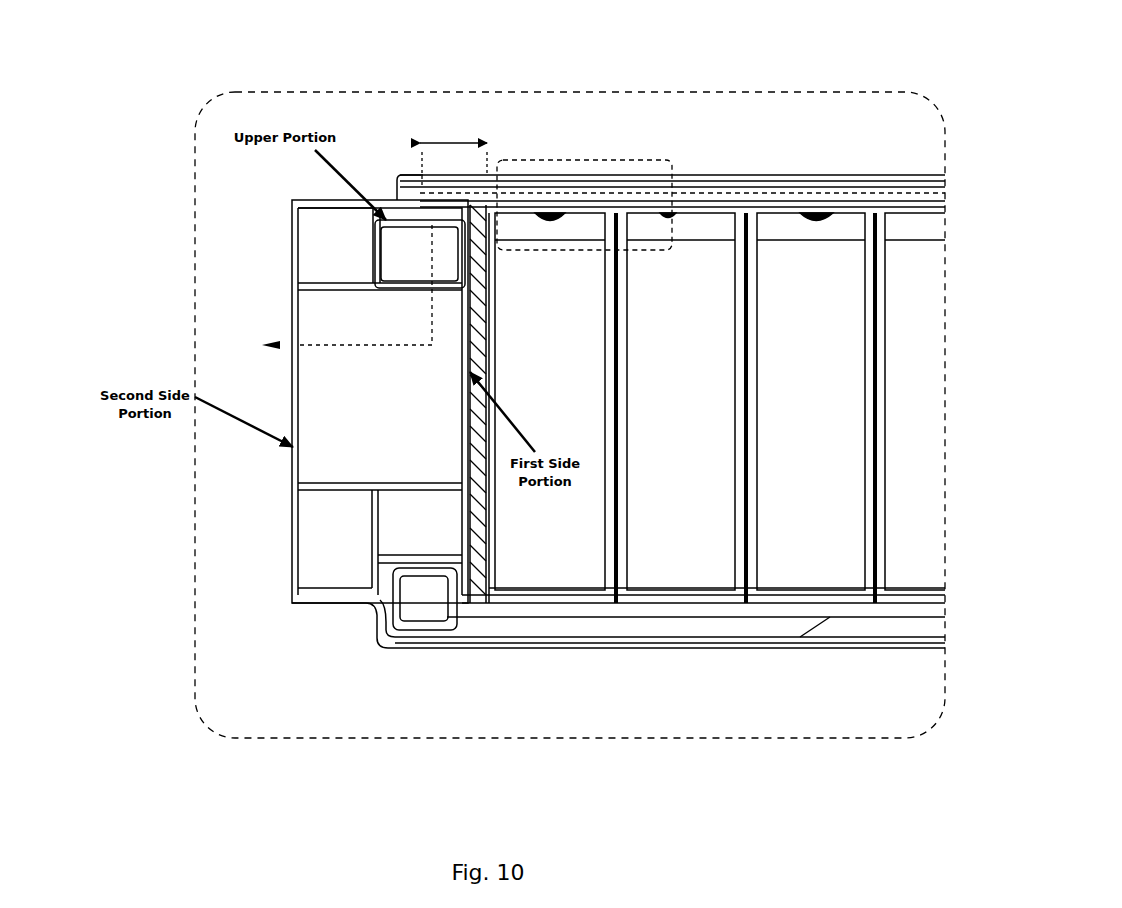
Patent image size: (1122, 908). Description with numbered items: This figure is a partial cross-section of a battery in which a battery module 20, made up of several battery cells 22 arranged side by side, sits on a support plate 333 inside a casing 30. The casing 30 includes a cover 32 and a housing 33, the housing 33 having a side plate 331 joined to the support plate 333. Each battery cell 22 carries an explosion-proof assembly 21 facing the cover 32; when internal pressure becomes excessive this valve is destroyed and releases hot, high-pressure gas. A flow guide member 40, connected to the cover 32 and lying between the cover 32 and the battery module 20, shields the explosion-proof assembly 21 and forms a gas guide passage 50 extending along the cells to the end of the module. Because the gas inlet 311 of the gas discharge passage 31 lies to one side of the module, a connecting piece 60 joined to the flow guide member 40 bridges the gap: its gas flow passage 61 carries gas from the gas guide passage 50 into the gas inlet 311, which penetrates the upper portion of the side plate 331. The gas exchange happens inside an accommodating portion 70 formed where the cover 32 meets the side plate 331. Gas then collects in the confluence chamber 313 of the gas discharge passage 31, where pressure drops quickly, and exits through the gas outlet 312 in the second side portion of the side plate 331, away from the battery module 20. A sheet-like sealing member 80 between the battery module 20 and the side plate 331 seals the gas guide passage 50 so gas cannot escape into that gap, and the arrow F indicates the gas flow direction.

The casing 30 is at (73, 570).
The gas discharge passage 31 is at (118, 173).
The gas inlet 311 is at (410, 213).
The gas outlet 312 is at (296, 322).
The confluence chamber 313 is at (363, 413).
The cover 32 is at (393, 190).
The housing 33 is at (118, 503).
The side plate 331 is at (293, 465).
The support plate 333 is at (467, 643).
The accommodating portion 70 is at (400, 197).
The sealing member 80 is at (480, 337).
The flow guide member 40 is at (682, 187).
The gas guide passage 50 is at (742, 190).
The connecting piece 60 is at (453, 150).
The gas flow passage 61 is at (486, 190).
The force direction F is at (606, 158).
The explosion-proof assembly 21 is at (812, 222).
The battery cell 22 is at (556, 500).
The battery module 20 is at (540, 800).